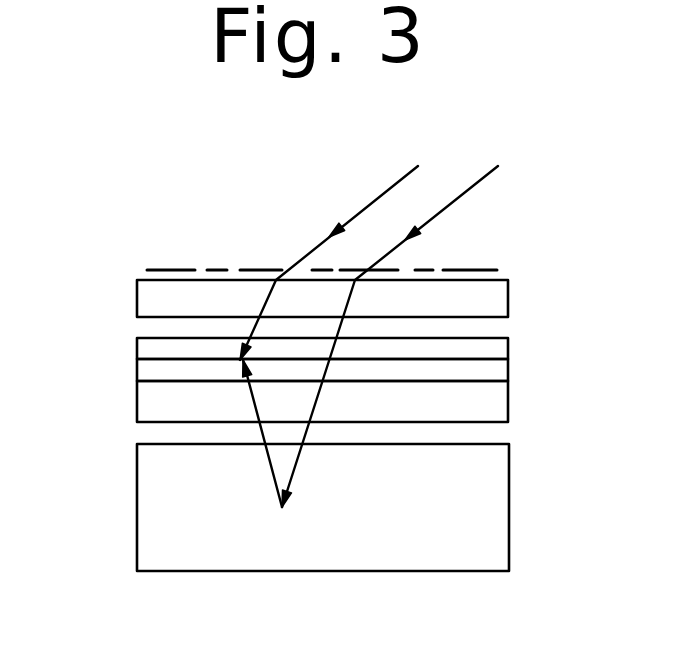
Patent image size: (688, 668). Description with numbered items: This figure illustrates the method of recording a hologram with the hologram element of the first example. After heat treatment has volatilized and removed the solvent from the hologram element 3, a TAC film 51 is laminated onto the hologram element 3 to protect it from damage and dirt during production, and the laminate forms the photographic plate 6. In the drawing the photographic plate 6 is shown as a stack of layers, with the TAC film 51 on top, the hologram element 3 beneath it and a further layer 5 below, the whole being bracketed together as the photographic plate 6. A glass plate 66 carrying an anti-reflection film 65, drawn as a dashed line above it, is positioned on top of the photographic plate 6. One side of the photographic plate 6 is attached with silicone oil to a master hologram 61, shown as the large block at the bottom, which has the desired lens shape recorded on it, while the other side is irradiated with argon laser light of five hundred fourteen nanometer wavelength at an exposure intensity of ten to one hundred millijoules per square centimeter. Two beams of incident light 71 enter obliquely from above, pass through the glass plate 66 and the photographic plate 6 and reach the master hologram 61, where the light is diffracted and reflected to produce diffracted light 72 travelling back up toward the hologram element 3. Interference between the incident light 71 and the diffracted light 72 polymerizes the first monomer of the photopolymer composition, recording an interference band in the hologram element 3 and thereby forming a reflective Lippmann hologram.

The hologram element 3 is at (497, 373).
The substrate 5 is at (367, 406).
The photographic plate 6 is at (401, 373).
The TAC film 51 is at (497, 352).
The master hologram 61 is at (483, 545).
The anti-reflection film 65 is at (467, 267).
The glass plate 66 is at (493, 302).
The incident light 71 is at (263, 298).
The diffracted light 72 is at (261, 431).